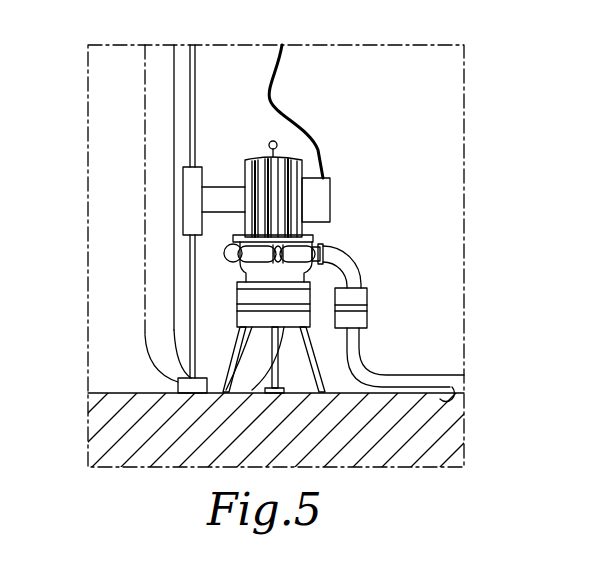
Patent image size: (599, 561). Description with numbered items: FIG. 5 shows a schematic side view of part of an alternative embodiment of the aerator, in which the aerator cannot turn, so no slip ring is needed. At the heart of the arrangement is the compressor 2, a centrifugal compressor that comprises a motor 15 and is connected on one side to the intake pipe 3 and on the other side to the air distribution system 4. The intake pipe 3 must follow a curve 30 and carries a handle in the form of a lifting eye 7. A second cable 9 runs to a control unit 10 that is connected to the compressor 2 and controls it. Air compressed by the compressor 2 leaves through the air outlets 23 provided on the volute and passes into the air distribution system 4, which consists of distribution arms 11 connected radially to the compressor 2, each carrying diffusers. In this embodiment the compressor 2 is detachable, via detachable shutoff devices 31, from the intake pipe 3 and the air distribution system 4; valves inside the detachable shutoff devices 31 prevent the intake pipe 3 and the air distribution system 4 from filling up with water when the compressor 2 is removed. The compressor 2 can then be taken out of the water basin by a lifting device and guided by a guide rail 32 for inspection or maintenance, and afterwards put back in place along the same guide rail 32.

The compressor 2 is at (337, 133).
The intake pipe 3 is at (163, 167).
The air distribution system 4 is at (455, 382).
The lifting eye 7 is at (268, 143).
The second cable 9 is at (326, 157).
The control unit 10 is at (312, 208).
The distribution arms 11 is at (448, 393).
The motor 15 is at (316, 228).
The air outlets 23 is at (352, 275).
The curve 30 is at (207, 361).
The detachable shutoff devices 31 is at (312, 322).
The guide rail 32 is at (191, 50).